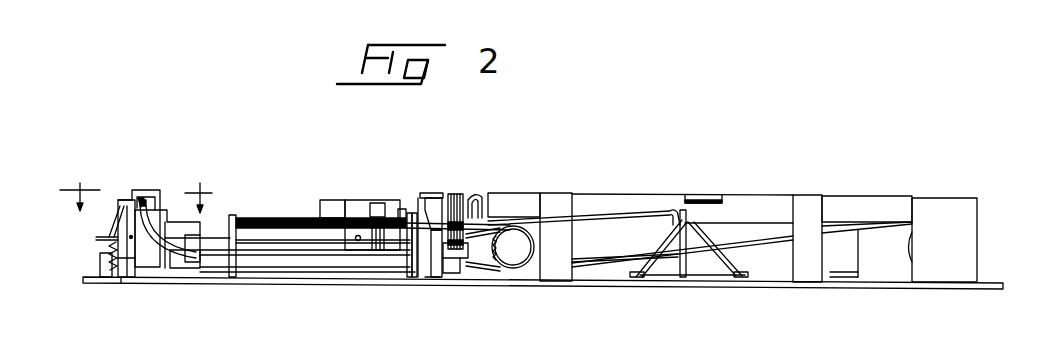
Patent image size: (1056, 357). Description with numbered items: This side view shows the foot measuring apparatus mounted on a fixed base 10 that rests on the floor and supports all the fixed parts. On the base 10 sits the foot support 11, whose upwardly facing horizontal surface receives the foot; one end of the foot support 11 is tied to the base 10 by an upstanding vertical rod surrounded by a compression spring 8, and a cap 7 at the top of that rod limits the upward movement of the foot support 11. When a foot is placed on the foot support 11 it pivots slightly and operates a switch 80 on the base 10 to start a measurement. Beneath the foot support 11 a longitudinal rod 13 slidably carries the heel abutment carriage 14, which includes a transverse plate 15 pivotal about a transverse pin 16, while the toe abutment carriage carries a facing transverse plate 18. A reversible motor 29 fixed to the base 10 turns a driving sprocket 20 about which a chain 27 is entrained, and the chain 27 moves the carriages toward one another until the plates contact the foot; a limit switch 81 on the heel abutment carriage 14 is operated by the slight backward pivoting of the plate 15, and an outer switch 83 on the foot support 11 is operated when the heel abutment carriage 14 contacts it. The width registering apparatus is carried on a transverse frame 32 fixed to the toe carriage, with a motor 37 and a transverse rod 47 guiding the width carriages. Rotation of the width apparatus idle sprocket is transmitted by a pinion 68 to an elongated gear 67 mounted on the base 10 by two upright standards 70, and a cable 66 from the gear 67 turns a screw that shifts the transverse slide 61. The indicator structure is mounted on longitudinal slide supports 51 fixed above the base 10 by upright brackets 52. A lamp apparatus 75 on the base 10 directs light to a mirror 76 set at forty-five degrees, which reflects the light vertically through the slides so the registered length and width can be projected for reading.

The cap 7 is at (108, 237).
The compression spring 8 is at (123, 278).
The base 10 is at (990, 284).
The foot support 11 is at (273, 212).
The longitudinal rod 13 is at (330, 273).
The heel abutment carriage 14 is at (206, 288).
The transverse plate 15 is at (147, 194).
The transverse pin 16 is at (166, 236).
The transverse plate 18 is at (430, 193).
The driving sprocket 20 is at (513, 247).
The chain 27 is at (494, 272).
The reversible motor 29 is at (491, 270).
The transverse frame 32 is at (357, 242).
The motor 37 is at (470, 200).
The transverse rod 47 is at (354, 238).
The slide supports 51 is at (868, 201).
The upright brackets 52 is at (560, 203).
The transverse slide 61 is at (715, 200).
The cable 66 is at (608, 216).
The elongated gear 67 is at (343, 214).
The pinion 68 is at (429, 195).
The upright standards 70 is at (432, 277).
The lamp apparatus 75 is at (965, 224).
The mirror 76 is at (733, 260).
The switch 80 is at (100, 264).
The limit switch 81 is at (138, 197).
The outer switch 83 is at (130, 203).